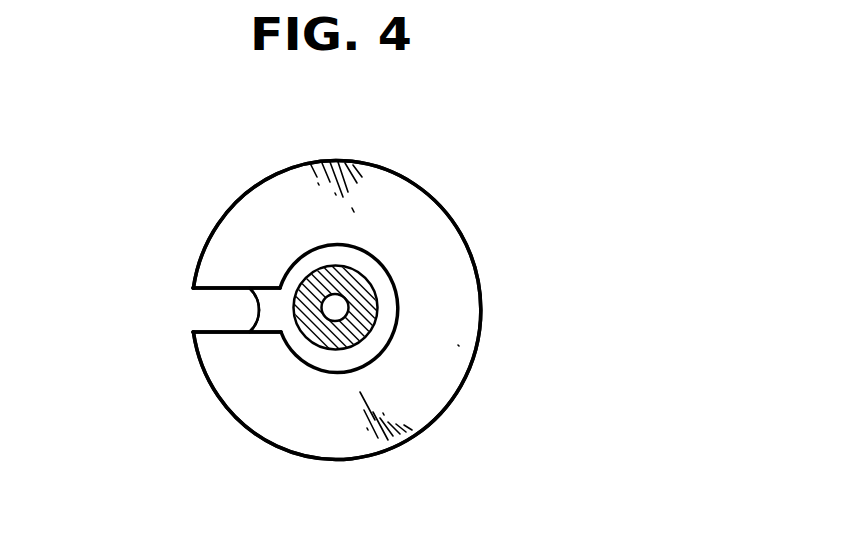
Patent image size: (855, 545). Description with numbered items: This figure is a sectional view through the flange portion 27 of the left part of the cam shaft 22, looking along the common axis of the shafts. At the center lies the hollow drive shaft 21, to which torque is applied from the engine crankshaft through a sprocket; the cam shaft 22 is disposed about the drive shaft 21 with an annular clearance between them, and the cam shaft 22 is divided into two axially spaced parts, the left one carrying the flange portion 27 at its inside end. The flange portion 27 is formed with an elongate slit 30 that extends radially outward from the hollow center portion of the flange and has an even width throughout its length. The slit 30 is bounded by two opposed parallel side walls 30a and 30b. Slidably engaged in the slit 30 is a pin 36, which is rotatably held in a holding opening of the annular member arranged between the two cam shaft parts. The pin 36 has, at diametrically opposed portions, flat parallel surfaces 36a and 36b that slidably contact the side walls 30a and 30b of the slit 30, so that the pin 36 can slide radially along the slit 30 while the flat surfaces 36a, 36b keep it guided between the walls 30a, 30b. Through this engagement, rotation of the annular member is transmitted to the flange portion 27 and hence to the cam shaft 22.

The drive shaft 21 is at (362, 337).
The cam shaft 22 is at (425, 283).
The flange portion 27 is at (437, 198).
The elongate slit 30 is at (272, 313).
The side wall of slit 30a is at (206, 298).
The side wall of slit 30b is at (217, 332).
The pin 36 is at (205, 310).
The flat parallel surface of pin 36a is at (233, 288).
The flat parallel surface of pin 36b is at (232, 335).